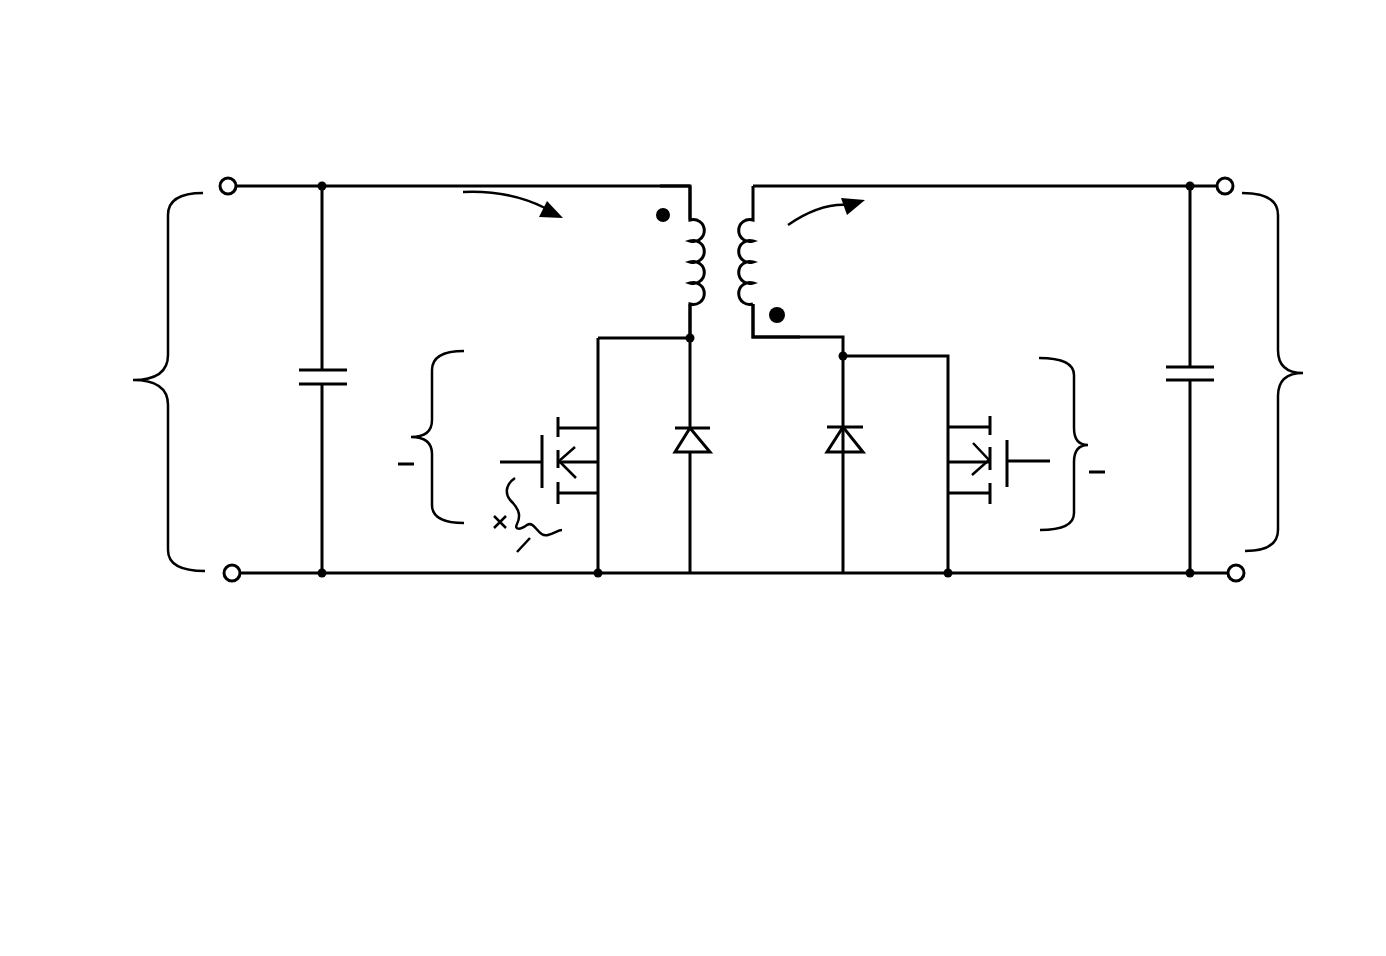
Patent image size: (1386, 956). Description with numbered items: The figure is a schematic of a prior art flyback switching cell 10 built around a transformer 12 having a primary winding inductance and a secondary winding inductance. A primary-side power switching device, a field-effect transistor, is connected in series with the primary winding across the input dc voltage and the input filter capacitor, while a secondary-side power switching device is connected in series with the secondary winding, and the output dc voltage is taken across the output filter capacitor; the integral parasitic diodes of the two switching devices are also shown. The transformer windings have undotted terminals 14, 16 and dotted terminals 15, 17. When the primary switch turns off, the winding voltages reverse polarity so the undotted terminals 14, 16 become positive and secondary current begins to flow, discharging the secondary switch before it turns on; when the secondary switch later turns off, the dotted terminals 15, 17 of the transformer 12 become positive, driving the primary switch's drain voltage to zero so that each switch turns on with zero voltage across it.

The flyback switching cell 10 is at (877, 115).
The transformer 12 is at (720, 220).
The undotted terminal 14 is at (767, 197).
The dotted terminal 15 is at (623, 225).
The undotted terminal 16 is at (770, 323).
The dotted terminal 17 is at (690, 338).